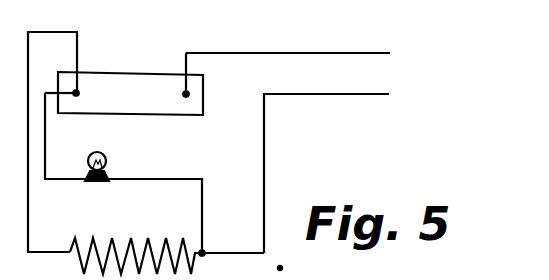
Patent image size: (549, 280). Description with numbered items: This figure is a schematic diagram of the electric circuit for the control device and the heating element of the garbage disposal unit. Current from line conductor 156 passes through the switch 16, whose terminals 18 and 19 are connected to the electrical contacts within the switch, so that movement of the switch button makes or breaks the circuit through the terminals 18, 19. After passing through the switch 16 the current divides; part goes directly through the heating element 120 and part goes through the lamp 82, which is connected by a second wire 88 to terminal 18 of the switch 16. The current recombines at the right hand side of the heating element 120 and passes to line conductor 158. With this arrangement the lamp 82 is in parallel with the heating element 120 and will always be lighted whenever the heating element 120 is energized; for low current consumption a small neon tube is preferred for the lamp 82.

The switch 16 is at (112, 84).
The terminal 18 is at (76, 94).
The terminal 19 is at (186, 95).
The lamp 82 is at (101, 166).
The second wire 88 is at (58, 180).
The heating element 120 is at (132, 240).
The line conductor 156 is at (357, 53).
The line conductor 158 is at (377, 93).